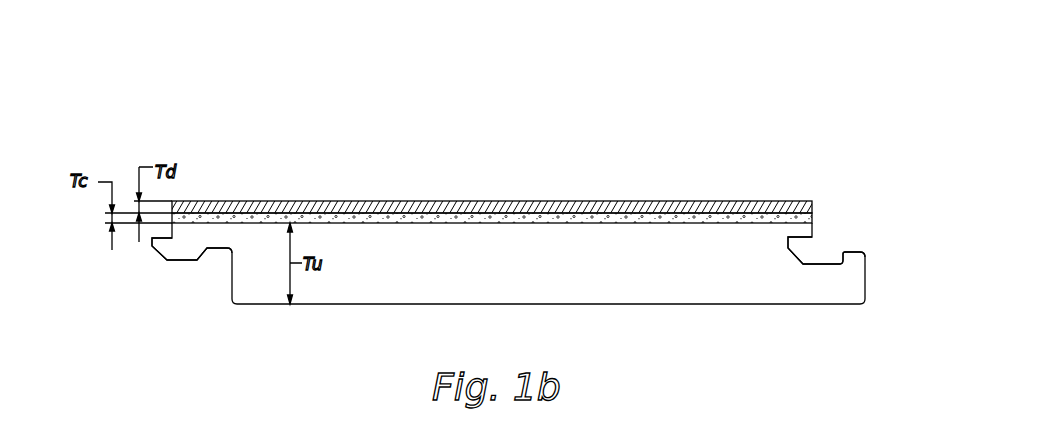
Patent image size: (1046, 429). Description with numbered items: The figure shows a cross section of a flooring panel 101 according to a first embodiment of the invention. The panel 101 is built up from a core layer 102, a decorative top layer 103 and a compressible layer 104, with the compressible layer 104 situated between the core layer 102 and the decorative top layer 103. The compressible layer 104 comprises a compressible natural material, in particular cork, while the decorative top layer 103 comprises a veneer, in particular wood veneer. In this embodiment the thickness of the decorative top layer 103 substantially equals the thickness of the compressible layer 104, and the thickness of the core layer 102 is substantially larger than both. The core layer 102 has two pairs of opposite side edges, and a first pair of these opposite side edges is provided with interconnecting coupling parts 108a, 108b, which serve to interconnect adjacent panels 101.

The flooring panel 101 is at (238, 158).
The core layer 102 is at (567, 273).
The decorative top layer 103 is at (448, 209).
The compressible layer 104 is at (547, 217).
The interconnecting coupling part 108a is at (183, 293).
The interconnecting coupling part 108b is at (849, 214).